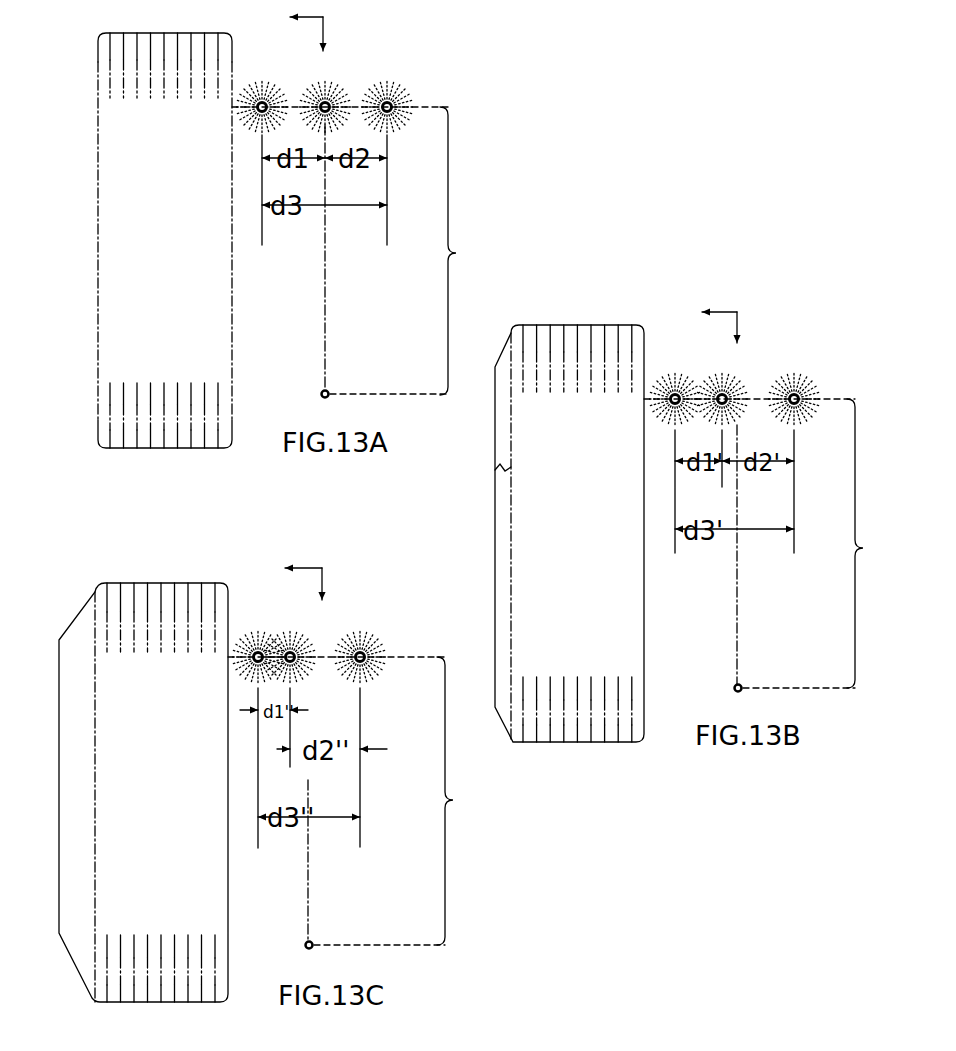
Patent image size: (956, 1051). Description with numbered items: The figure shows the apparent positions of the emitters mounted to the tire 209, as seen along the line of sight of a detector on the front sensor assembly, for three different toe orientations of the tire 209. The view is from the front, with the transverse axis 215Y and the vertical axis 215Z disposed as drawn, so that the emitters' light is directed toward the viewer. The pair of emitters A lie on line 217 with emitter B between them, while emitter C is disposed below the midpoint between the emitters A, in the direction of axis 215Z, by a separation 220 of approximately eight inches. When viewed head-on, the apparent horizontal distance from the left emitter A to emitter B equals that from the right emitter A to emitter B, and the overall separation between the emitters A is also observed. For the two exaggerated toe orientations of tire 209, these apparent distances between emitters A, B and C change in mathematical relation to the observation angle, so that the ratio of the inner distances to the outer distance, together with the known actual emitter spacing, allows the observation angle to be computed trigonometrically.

In FIG. 13A, the tire 209 is at (98, 177).
In FIG. 13B, the tire 209 is at (511, 470).
In FIG. 13C, the tire 209 is at (95, 726).
In FIG. 13A, the line 217 is at (434, 104).
In FIG. 13B, the line 217 is at (843, 397).
In FIG. 13C, the line 217 is at (429, 655).
In FIG. 13A, the separation 220 is at (468, 251).
In FIG. 13B, the separation 220 is at (876, 543).
In FIG. 13C, the separation 220 is at (466, 801).
In FIG. 13A, the coordinate axis 215Y is at (305, 19).
In FIG. 13B, the coordinate axis 215Y is at (718, 314).
In FIG. 13C, the coordinate axis 215Y is at (303, 570).
In FIG. 13A, the coordinate axis 215Z is at (326, 34).
In FIG. 13B, the coordinate axis 215Z is at (740, 328).
In FIG. 13C, the coordinate axis 215Z is at (325, 584).
In FIG. 13A, the emitter A is at (258, 100).
In FIG. 13B, the emitter A is at (671, 393).
In FIG. 13C, the emitter A is at (254, 651).
In FIG. 13A, the emitter B is at (322, 100).
In FIG. 13B, the emitter B is at (719, 392).
In FIG. 13C, the emitter B is at (288, 650).
In FIG. 13A, the emitter C is at (330, 391).
In FIG. 13B, the emitter C is at (744, 686).
In FIG. 13C, the emitter C is at (315, 943).